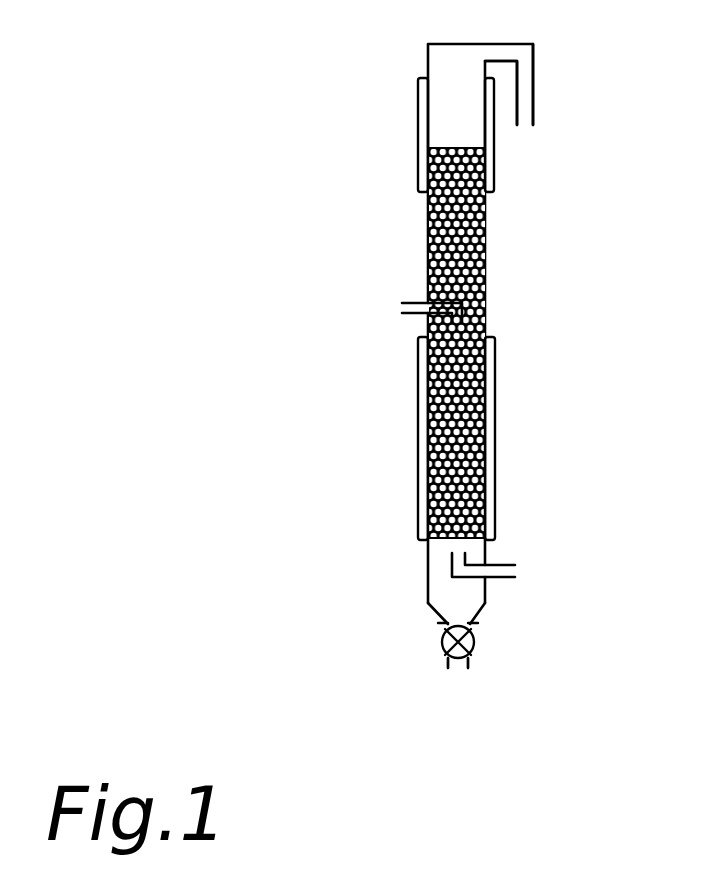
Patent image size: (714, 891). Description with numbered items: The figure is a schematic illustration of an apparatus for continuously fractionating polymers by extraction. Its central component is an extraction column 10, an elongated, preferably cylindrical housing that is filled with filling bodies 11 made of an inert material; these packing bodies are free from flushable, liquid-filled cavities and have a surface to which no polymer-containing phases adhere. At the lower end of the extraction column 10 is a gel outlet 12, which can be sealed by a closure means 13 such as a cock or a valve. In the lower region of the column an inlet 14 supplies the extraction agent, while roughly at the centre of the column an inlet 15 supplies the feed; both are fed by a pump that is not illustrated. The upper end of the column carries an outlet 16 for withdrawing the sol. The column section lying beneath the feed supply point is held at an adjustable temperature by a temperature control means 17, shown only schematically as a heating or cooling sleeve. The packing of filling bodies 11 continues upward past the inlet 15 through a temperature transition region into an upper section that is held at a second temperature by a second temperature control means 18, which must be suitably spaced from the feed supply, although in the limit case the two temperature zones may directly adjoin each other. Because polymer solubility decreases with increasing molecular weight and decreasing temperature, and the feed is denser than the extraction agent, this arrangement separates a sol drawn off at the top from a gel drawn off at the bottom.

The extraction column 10 is at (506, 259).
The filling bodies 11 is at (490, 383).
The gel outlet 12 is at (455, 673).
The closure means 13 is at (437, 645).
The inlet for extraction agent 14 is at (520, 570).
The inlet for feed 15 is at (394, 311).
The outlet for sol 16 is at (523, 127).
The temperature control means 17 is at (418, 467).
The second temperature control means 18 is at (418, 140).